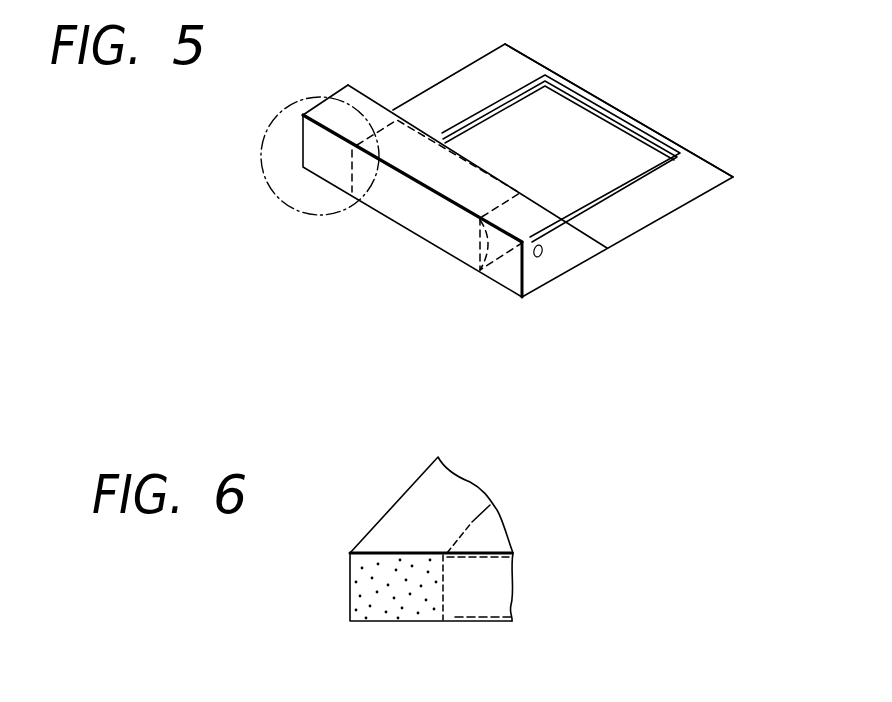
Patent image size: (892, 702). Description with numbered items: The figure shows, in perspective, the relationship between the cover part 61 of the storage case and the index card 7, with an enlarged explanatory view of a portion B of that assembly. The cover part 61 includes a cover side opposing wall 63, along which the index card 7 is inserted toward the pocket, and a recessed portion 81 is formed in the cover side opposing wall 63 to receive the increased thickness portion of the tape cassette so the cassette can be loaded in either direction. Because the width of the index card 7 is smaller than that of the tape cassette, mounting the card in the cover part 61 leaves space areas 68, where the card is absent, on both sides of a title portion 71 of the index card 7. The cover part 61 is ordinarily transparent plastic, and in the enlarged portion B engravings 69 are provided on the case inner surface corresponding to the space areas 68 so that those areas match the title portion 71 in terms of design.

In FIG. 5, the index card 7 is at (597, 182).
In FIG. 6, the index card 7 is at (467, 530).
In FIG. 5, the cover part 61 is at (423, 90).
In FIG. 6, the cover part 61 is at (390, 530).
In FIG. 5, the cover side opposing wall 63 is at (485, 72).
In FIG. 5, the space areas 68 is at (322, 163).
In FIG. 6, the space areas 68 is at (418, 608).
In FIG. 6, the engravings 69 is at (377, 613).
In FIG. 5, the title portion 71 is at (472, 285).
In FIG. 6, the title portion 71 is at (500, 624).
In FIG. 5, the recessed portion 81 is at (677, 150).
In FIG. 5, the portion B is at (280, 113).